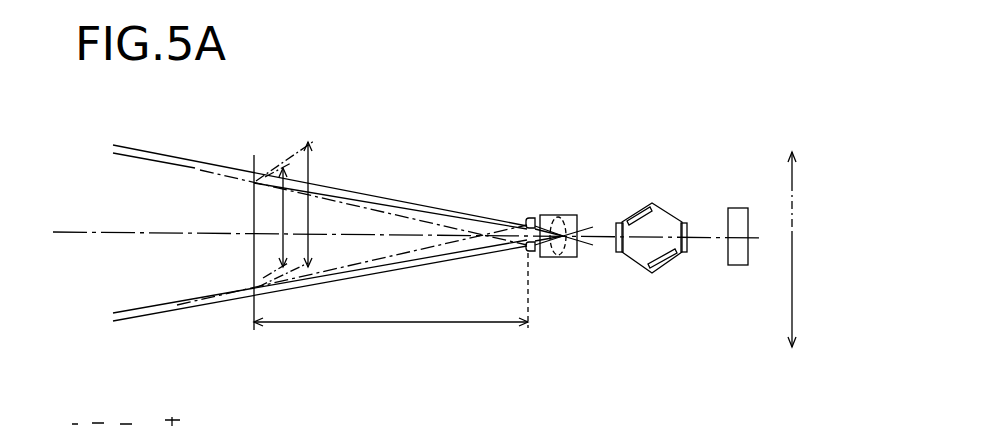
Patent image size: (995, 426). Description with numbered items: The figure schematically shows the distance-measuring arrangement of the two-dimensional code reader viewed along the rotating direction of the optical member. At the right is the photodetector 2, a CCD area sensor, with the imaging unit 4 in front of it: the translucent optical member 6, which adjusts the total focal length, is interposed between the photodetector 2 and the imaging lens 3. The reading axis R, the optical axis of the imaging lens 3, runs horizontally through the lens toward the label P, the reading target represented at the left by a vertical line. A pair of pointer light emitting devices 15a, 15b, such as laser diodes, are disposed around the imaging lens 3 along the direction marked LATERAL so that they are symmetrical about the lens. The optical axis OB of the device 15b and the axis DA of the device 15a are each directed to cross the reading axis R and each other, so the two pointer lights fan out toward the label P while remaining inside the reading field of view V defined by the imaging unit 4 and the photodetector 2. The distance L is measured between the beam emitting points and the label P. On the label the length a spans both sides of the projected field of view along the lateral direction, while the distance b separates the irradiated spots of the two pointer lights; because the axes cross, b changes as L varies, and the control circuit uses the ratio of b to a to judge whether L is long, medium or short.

The photodetector 2 is at (743, 207).
The imaging lens 3 is at (573, 214).
The imaging unit 4 is at (688, 272).
The optical member 6 is at (653, 202).
The pointer light emitting device 15a is at (532, 217).
The pointer light emitting device 15b is at (522, 253).
The label P is at (252, 155).
The reading field of view V is at (373, 196).
The reading axis R is at (150, 236).
The optical axis OB is at (150, 165).
The lower beam DA is at (221, 293).
The distance L is at (391, 290).
The length a is at (312, 204).
The distance b is at (288, 217).
The lateral direction LATERAL is at (792, 318).